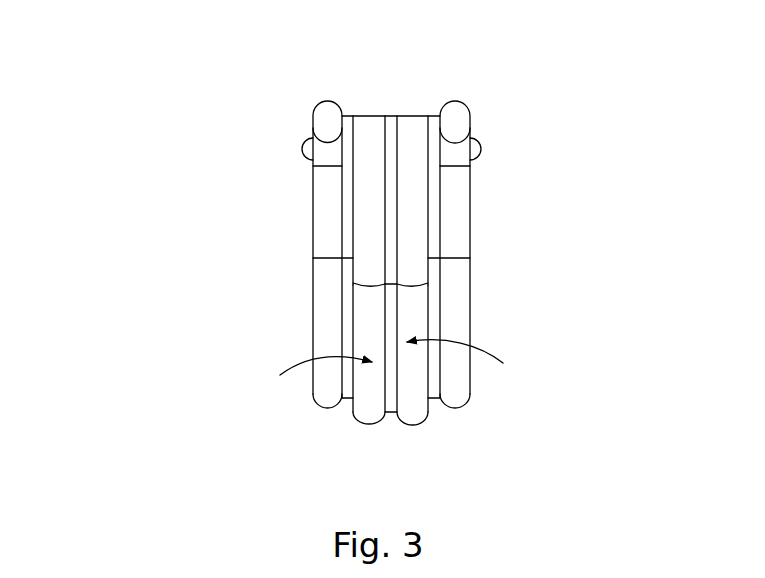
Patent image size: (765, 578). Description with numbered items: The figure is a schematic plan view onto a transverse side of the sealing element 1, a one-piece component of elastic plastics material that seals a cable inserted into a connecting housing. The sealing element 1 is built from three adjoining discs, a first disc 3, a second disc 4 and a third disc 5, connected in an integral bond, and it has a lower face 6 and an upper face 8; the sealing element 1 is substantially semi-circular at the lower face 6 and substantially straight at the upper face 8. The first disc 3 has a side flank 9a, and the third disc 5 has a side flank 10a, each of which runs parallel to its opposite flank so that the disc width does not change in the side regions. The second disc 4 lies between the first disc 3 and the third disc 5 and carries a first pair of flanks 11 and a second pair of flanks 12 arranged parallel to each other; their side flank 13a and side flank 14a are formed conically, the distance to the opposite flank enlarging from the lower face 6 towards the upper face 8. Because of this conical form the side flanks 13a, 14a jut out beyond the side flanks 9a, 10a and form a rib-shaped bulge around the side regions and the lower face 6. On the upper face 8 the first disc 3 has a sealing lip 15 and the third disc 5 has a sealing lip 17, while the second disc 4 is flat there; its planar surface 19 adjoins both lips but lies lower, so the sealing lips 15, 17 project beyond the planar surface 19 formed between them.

The sealing element 1 is at (172, 97).
The first disc 3 is at (450, 190).
The second disc 4 is at (375, 388).
The third disc 5 is at (328, 189).
The lower face 6 is at (435, 455).
The upper face 8 is at (415, 85).
The side flank of the first disc 9a is at (452, 230).
The side flank of the third disc 10a is at (328, 243).
The first pair of flanks 11 is at (300, 376).
The second pair of flanks 12 is at (478, 366).
The side flank of the first pair of flanks 13a is at (368, 313).
The side flank of the second pair of flanks 14a is at (413, 306).
The sealing lip of the first disc 15 is at (451, 117).
The sealing lip of the third disc 17 is at (323, 116).
The planar surface 19 is at (379, 116).